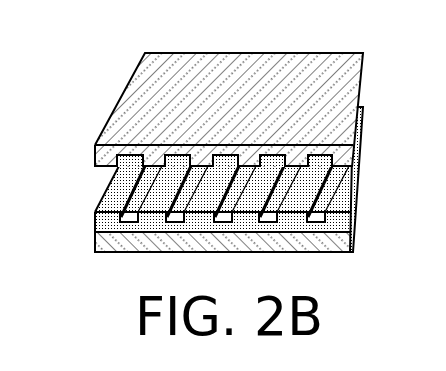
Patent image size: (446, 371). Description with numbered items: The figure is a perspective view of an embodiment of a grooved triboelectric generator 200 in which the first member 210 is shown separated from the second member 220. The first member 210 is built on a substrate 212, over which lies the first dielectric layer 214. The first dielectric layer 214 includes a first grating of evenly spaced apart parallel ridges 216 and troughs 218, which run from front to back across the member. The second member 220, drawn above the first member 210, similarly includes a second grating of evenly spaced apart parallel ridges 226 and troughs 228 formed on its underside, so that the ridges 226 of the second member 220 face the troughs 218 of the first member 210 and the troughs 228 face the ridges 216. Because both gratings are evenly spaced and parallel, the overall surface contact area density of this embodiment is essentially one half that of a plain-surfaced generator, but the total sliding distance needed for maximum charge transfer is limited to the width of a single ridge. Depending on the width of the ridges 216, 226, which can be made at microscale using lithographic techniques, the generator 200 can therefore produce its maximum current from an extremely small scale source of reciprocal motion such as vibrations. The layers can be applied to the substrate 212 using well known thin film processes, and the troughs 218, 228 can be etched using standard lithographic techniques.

The grooved triboelectric generator 200 is at (61, 94).
The first member 210 is at (355, 225).
The substrate 212 is at (354, 237).
The first dielectric layer 214 is at (95, 214).
The ridges 216 is at (172, 221).
The troughs 218 is at (310, 220).
The second member 220 is at (119, 104).
The ridges 226 is at (212, 158).
The troughs 228 is at (313, 157).